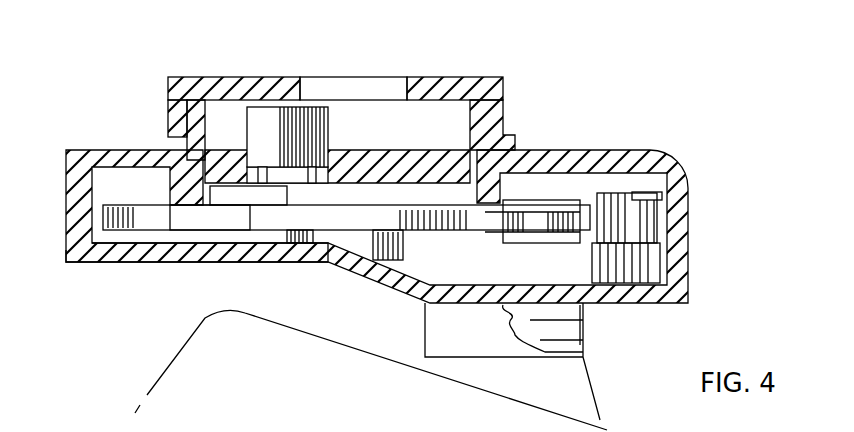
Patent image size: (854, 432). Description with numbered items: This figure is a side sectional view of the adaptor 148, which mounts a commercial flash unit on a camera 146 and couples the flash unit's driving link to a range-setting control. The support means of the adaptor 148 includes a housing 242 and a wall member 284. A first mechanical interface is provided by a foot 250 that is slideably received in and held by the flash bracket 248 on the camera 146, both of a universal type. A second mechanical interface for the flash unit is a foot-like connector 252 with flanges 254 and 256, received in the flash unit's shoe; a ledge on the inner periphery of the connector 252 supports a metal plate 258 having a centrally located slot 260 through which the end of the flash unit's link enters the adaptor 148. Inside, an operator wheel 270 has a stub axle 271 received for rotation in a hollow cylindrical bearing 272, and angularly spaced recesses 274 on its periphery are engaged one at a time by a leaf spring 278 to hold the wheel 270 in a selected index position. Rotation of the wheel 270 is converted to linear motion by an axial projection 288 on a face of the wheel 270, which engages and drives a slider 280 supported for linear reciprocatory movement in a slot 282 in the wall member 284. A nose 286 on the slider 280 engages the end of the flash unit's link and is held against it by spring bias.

The camera 146 is at (165, 358).
The adaptor 148 is at (402, 165).
The housing 242 is at (665, 160).
The flash bracket 248 is at (560, 348).
The foot 250 is at (573, 328).
The foot-like connector 252 is at (198, 140).
The flange 254 is at (505, 106).
The flange 256 is at (168, 105).
The metal plate 258 is at (201, 76).
The slot 260 is at (303, 78).
The wheel 270 is at (232, 214).
The stub axle 271 is at (355, 238).
The hollow cylindrical bearing 272 is at (403, 257).
The recesses 274 is at (552, 227).
The leaf spring 278 is at (598, 225).
The slider 280 is at (298, 200).
The slot 282 is at (270, 178).
The wall member 284 is at (413, 165).
The nose 286 is at (295, 130).
The axial projection 288 is at (205, 262).